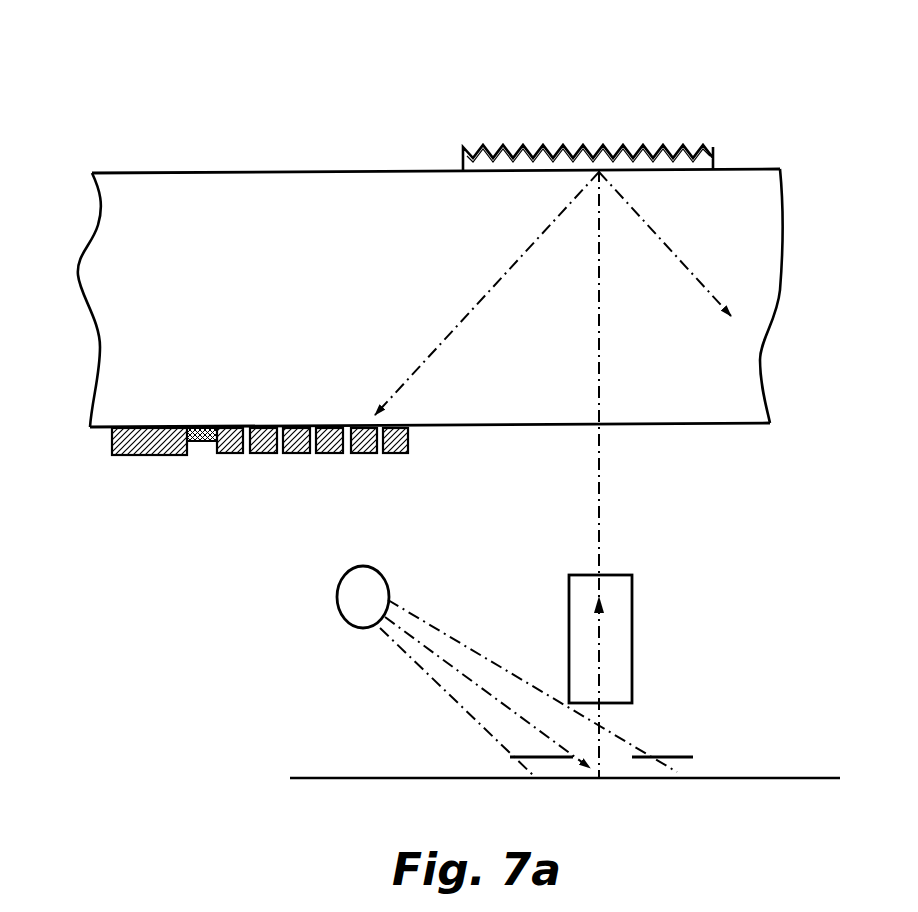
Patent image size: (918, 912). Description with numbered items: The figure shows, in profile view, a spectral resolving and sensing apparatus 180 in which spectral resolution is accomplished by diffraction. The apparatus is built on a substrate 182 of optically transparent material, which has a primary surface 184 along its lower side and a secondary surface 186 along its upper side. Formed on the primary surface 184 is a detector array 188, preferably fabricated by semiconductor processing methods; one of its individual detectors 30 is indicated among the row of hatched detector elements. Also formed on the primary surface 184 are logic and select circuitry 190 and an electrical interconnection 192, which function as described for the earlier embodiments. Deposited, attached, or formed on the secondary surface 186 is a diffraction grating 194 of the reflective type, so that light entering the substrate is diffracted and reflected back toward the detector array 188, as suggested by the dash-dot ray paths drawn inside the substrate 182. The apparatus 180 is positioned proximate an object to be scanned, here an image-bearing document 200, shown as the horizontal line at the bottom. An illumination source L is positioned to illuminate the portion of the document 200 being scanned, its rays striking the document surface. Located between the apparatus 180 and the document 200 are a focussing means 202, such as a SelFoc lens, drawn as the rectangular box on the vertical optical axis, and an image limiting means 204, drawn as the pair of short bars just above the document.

The spectral resolving and sensing apparatus 180 is at (150, 52).
The substrate 182 is at (190, 192).
The primary surface 184 is at (738, 428).
The secondary surface 186 is at (760, 160).
The detector array 188 is at (402, 496).
The logic and select circuitry 190 is at (120, 456).
The electrical interconnection 192 is at (200, 443).
The detector 30 is at (228, 454).
The diffraction grating 194 is at (628, 147).
The image-bearing document 200 is at (353, 778).
The focussing means 202 is at (632, 658).
The image limiting means 204 is at (660, 755).
The illumination source L is at (340, 608).